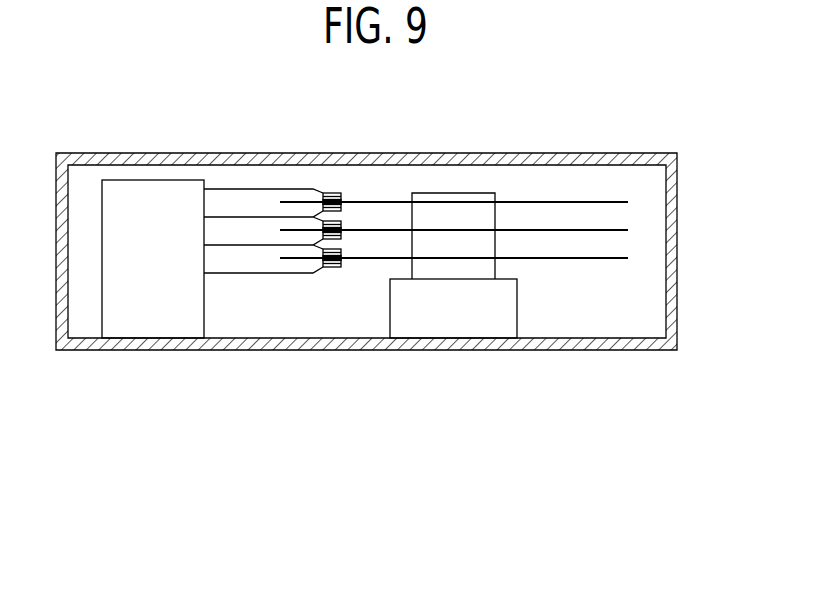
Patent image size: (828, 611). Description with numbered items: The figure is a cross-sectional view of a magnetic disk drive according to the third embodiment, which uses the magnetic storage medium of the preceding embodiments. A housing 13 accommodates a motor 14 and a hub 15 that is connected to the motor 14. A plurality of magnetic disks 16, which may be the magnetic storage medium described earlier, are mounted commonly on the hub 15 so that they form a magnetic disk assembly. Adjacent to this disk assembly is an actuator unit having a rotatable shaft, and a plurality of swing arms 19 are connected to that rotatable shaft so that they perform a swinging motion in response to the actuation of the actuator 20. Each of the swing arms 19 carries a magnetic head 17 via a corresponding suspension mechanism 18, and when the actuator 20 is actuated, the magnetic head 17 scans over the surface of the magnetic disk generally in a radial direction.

The housing 13 is at (677, 321).
The motor 14 is at (452, 322).
The hub 15 is at (455, 193).
The magnetic disks 16 is at (568, 201).
The magnetic head 17 is at (343, 193).
The suspension mechanism 18 is at (322, 193).
The swing arms 19 is at (244, 189).
The actuator 20 is at (156, 322).